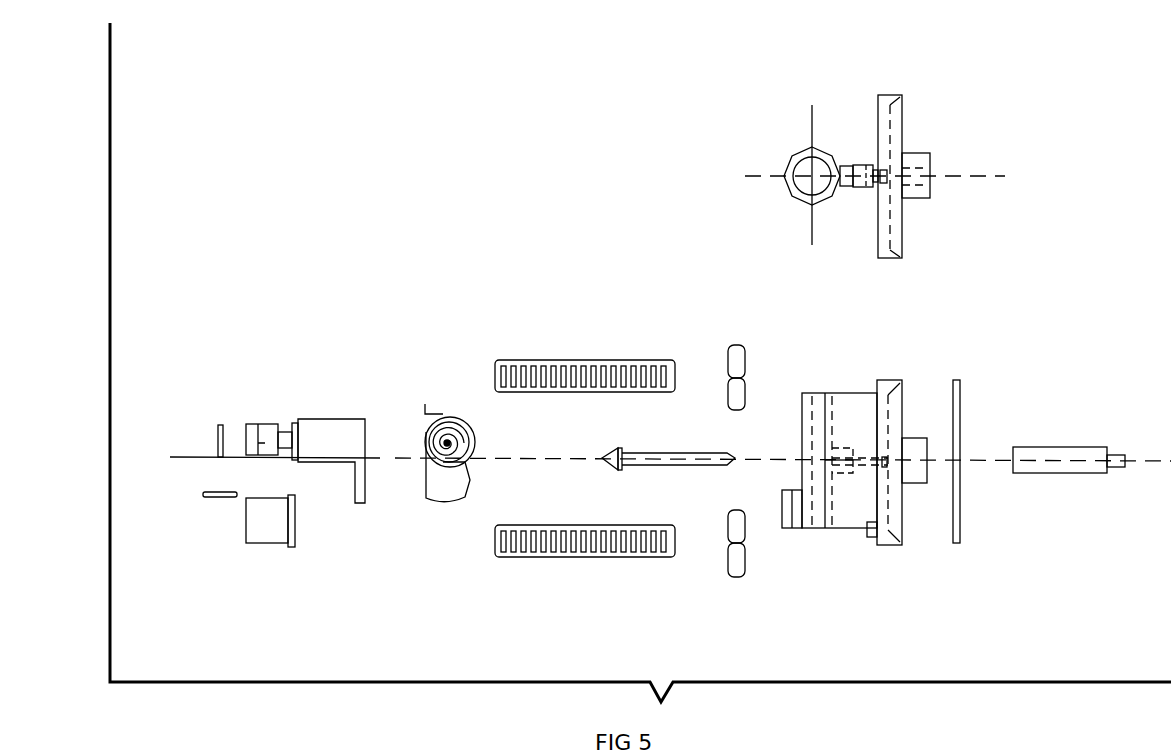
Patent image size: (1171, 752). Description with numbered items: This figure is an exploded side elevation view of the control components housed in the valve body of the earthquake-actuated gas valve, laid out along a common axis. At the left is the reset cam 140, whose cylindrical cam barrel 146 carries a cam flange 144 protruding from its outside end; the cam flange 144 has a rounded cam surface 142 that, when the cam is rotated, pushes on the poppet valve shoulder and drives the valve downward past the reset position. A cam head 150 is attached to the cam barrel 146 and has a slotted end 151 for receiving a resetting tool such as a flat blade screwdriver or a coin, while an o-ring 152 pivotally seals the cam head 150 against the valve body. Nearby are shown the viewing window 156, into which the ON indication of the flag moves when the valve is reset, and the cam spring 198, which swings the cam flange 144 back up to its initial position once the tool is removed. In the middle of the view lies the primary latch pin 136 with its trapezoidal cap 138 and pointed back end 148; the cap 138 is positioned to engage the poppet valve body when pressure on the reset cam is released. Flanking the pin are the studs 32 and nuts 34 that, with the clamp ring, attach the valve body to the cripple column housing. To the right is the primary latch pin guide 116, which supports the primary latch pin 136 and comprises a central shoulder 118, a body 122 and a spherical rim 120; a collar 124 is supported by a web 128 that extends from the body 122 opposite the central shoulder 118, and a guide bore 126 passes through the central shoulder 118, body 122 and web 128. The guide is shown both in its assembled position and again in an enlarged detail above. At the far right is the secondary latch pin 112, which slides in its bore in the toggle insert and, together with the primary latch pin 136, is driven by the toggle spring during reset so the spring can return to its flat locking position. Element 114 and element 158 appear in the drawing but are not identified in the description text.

The studs 32 is at (517, 360).
The nuts 34 is at (745, 352).
The secondary latch pin 112 is at (1068, 447).
The plate 114 is at (962, 395).
The primary latch pin guide 116 is at (856, 385).
The central shoulder 118 is at (920, 438).
The spherical rim 120 is at (893, 548).
The body 122 is at (878, 380).
The collar 124 is at (787, 530).
The guide bore 126 is at (910, 498).
The web 128 is at (850, 530).
The primary latch pin 136 is at (705, 453).
The trapezoidal cap 138 is at (605, 455).
The reset cam 140 is at (316, 410).
The cam surface 142 is at (472, 480).
The cam flange 144 is at (352, 490).
The cam barrel 146 is at (347, 419).
The pointed back end 148 is at (735, 458).
The cam head 150 is at (264, 424).
The slotted end 151 is at (243, 428).
The o-ring 152 is at (218, 425).
The viewing window 156 is at (263, 543).
The bar 158 is at (222, 498).
The cam spring 198 is at (443, 463).